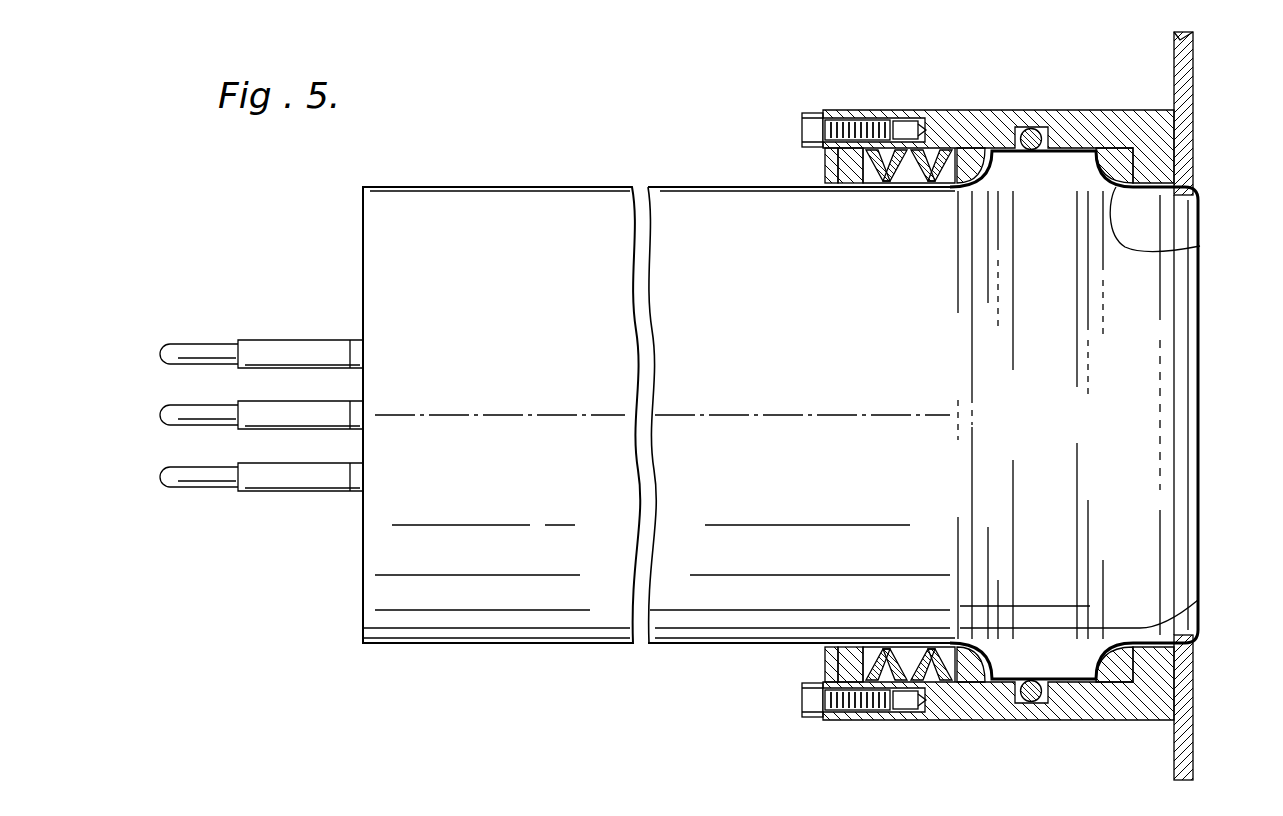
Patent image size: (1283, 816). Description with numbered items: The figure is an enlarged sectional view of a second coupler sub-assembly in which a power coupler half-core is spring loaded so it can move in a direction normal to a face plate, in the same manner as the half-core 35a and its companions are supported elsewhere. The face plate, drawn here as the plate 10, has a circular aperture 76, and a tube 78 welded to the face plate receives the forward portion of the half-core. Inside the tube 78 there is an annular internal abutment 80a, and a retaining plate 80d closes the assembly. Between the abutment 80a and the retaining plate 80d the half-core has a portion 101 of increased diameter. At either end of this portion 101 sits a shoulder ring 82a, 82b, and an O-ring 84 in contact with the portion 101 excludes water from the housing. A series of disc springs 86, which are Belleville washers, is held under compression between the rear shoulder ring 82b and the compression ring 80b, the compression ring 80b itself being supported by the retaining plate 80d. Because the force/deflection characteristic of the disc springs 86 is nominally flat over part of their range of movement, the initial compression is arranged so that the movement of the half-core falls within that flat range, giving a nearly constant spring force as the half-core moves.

The panel 10 is at (1195, 94).
The circular aperture 76 is at (1193, 197).
The tube 78 is at (979, 112).
The annular internal abutment 80a is at (1278, 255).
The compression ring 80b is at (872, 134).
The retaining plate 80d is at (826, 160).
The shoulder ring 82a is at (1118, 676).
The rear shoulder ring 82b is at (975, 676).
The O-ring 84 is at (1037, 131).
The disc springs 86 is at (878, 628).
The portion of increased diameter 101 is at (1060, 165).
The half-core 35a is at (1187, 398).